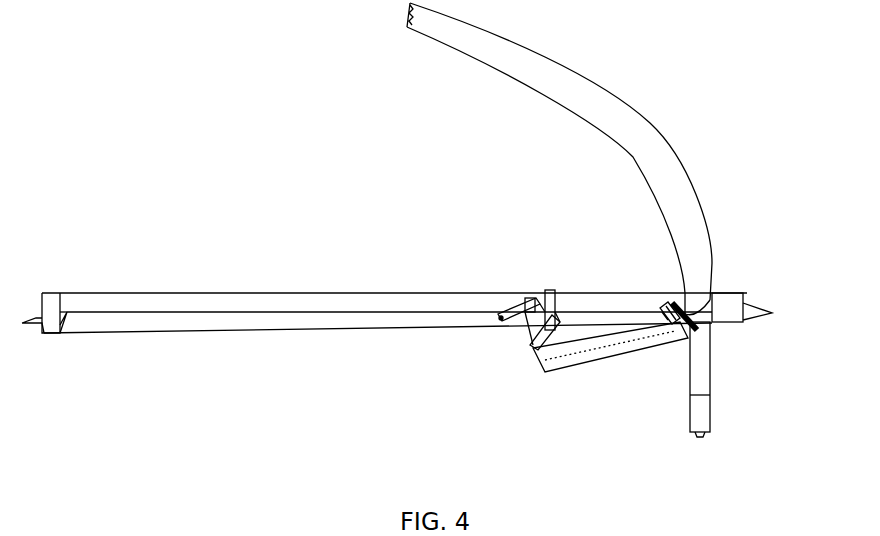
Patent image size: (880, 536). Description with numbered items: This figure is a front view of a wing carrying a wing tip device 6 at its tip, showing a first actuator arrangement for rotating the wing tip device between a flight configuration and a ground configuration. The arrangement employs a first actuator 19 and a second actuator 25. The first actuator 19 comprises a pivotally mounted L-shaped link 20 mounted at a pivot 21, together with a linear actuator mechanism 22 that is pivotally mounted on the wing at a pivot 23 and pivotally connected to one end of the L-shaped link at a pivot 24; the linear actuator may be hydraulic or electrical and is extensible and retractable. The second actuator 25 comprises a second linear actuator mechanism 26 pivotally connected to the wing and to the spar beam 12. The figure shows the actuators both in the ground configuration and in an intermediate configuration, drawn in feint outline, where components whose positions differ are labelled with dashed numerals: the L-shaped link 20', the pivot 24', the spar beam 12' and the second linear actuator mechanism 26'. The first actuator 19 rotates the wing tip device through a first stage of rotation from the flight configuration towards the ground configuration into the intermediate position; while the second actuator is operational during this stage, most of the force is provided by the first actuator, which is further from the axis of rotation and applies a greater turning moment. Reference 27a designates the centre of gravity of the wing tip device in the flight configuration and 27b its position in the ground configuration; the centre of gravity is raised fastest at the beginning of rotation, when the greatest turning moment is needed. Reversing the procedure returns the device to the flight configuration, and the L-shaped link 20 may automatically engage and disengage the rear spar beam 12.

The wing tip device 6 is at (583, 100).
The centre of gravity position in flight configuration 27a is at (828, 264).
The centre of gravity position in ground configuration 27b is at (655, 157).
The first actuator 19 is at (492, 272).
The linear actuator mechanism 22 is at (510, 313).
The pivot 23 is at (500, 320).
The pivot 24' is at (523, 266).
The pivot 24 is at (572, 265).
The pivot 21 is at (553, 322).
The L-shaped link 20' is at (509, 375).
The L-shaped link 20 is at (547, 380).
The spar beam 12' is at (610, 407).
The second linear actuator mechanism 26' is at (644, 368).
The second actuator 25 is at (672, 340).
The second linear actuator mechanism 26 is at (733, 343).
The spar beam 12 is at (742, 393).